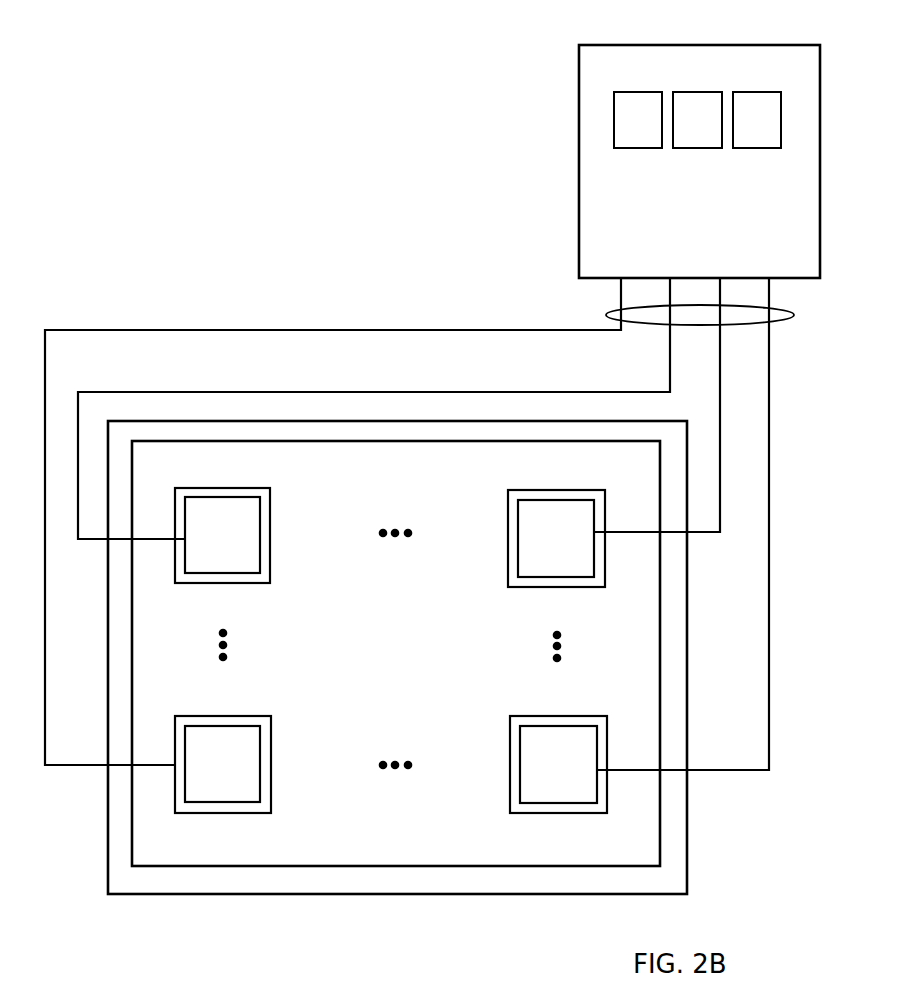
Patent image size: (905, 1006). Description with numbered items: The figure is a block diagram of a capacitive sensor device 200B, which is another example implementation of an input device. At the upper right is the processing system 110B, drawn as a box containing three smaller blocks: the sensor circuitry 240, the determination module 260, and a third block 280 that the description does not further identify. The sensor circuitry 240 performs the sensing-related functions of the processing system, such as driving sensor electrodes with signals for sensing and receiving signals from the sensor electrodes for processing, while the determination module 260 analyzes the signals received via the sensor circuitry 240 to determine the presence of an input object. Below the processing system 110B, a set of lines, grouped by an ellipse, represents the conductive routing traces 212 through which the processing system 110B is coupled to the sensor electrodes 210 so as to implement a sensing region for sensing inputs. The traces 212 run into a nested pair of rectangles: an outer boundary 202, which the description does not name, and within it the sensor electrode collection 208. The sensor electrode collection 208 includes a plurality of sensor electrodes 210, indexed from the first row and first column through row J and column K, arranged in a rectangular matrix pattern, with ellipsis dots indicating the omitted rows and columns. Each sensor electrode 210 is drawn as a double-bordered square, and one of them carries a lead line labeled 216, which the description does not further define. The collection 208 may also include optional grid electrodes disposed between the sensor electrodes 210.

The capacitive sensor device 200B is at (319, 224).
The processing system 110B is at (681, 250).
The sensor circuitry 240 is at (624, 130).
The determination module 260 is at (683, 130).
The processing system module 280 is at (743, 130).
The conductive routing traces 212 is at (794, 314).
The outer enclosure 202 is at (145, 894).
The sensor electrode collection 208 is at (195, 866).
The sensor electrodes 210 is at (250, 549).
The array element 216 is at (271, 743).